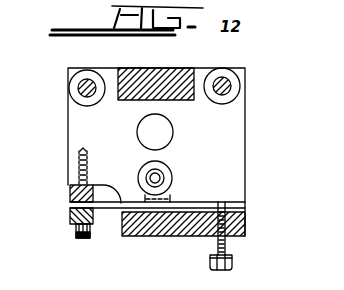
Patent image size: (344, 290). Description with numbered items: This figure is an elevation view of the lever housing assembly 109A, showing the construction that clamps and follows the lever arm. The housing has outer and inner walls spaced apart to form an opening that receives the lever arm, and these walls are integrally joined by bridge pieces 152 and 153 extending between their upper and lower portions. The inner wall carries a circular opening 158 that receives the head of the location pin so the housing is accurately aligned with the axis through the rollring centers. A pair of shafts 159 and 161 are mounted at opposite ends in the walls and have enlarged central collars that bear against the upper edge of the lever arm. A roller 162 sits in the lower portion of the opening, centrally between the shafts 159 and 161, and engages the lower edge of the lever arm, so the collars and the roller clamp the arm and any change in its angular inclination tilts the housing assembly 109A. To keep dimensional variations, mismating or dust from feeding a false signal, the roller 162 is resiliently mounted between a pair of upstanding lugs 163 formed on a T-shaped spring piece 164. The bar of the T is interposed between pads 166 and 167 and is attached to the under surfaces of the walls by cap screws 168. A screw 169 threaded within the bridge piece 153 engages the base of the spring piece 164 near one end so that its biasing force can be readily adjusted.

The lever housing assembly 109A is at (247, 141).
The bridge piece 152 is at (177, 70).
The bridge piece 153 is at (172, 237).
The circular opening 158 is at (164, 131).
The shaft 159 is at (87, 85).
The shaft 161 is at (229, 83).
The roller 162 is at (168, 172).
The upstanding lugs 163 is at (169, 197).
The spring piece 164 is at (235, 201).
The pad 166 is at (75, 188).
The pad 167 is at (73, 214).
The cap screws 168 is at (75, 238).
The screw 169 is at (227, 253).